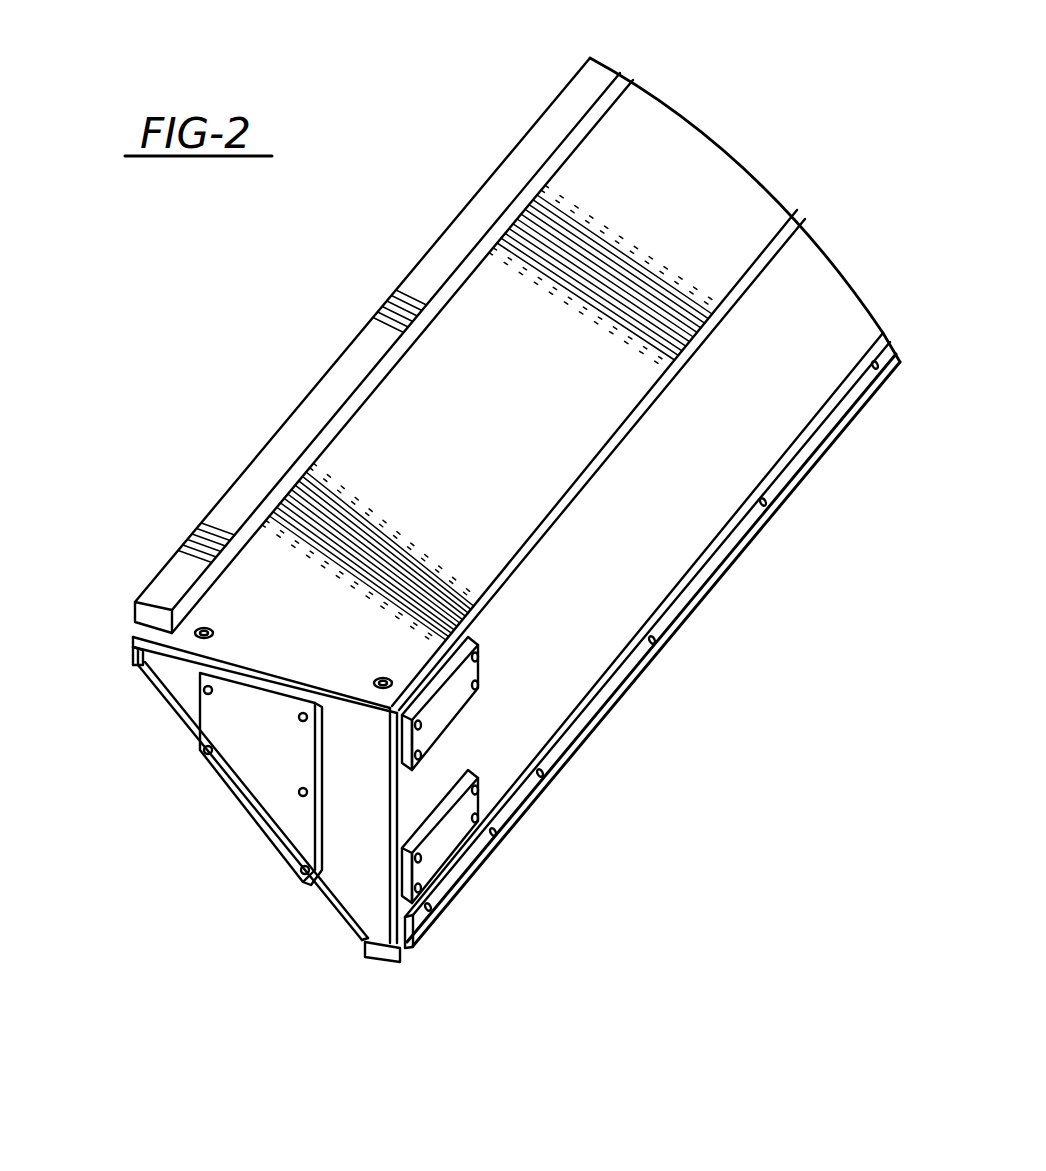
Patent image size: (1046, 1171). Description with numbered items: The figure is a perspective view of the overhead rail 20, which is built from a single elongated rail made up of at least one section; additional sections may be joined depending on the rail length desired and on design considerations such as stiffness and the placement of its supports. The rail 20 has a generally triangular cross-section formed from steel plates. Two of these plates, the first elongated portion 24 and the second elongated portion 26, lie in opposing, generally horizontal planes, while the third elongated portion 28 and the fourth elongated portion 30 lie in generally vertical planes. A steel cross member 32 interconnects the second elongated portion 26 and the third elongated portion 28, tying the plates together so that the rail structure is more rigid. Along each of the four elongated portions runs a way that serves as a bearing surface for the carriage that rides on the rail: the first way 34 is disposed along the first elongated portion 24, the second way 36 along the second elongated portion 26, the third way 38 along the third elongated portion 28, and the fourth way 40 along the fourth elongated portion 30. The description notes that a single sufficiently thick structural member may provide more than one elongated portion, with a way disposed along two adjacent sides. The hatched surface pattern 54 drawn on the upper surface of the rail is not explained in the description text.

The overhead rail 20 is at (745, 172).
The first elongated portion 24 is at (273, 538).
The second elongated portion 26 is at (365, 942).
The third elongated portion 28 is at (137, 675).
The fourth elongated portion 30 is at (662, 578).
The cross member 32 is at (330, 903).
The first way 34 is at (152, 617).
The second way 36 is at (390, 963).
The third way 38 is at (130, 658).
The fourth way 40 is at (563, 753).
The hatched surface pattern 54 is at (400, 362).